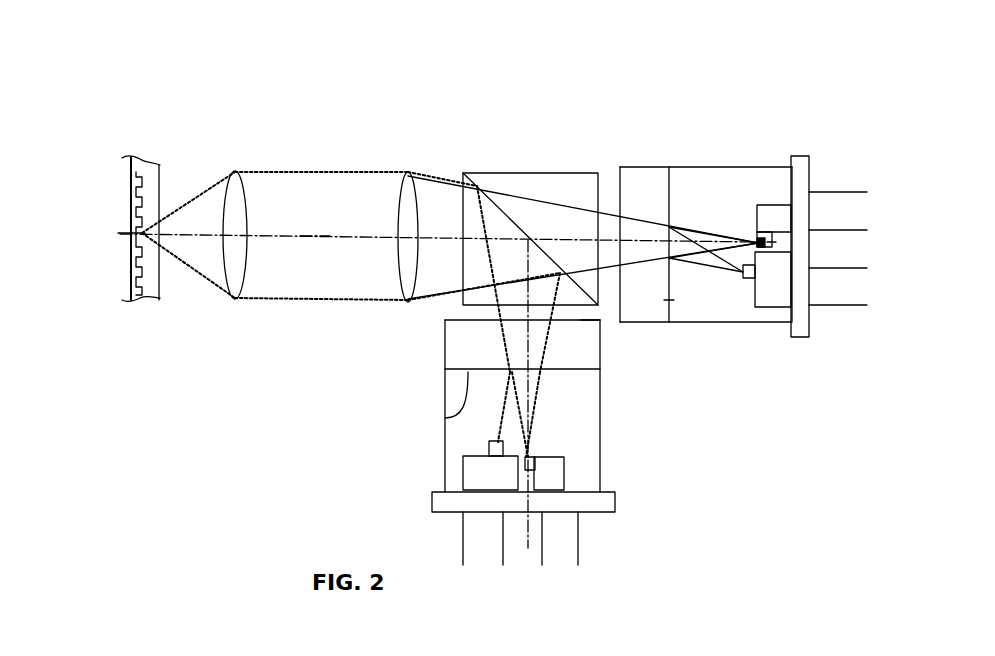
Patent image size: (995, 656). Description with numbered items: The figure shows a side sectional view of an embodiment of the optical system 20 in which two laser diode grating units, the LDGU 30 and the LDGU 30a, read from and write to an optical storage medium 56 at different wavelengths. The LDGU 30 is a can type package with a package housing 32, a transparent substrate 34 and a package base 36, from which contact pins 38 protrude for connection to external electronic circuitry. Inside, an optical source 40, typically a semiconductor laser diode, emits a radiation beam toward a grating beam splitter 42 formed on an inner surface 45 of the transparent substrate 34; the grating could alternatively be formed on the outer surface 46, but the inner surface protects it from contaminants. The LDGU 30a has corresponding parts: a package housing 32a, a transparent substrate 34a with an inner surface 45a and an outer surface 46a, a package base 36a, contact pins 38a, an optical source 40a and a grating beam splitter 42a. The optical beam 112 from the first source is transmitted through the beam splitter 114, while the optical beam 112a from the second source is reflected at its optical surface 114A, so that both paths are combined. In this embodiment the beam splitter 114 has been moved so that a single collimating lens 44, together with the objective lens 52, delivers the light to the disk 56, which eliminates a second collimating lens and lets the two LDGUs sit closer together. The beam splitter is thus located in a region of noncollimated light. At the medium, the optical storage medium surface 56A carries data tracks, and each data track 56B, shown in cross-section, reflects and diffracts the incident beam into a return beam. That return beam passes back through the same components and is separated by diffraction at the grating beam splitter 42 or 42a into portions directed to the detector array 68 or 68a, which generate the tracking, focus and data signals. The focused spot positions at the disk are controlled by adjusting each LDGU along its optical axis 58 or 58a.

The optical system 20 is at (487, 90).
The optical storage medium 56 is at (108, 153).
The optical storage medium surface 56A is at (125, 298).
The data track 56B is at (124, 234).
The objective lens 52 is at (232, 171).
The collimating lens 44 is at (407, 301).
The optical axis 58 is at (325, 236).
The beam splitter 114 is at (442, 174).
The optical surface 114A is at (510, 215).
The optical beam 112 is at (584, 177).
The optical beam 112a is at (497, 300).
The LDGU 30 is at (705, 145).
The outer surface 46 is at (620, 187).
The package housing 32 is at (733, 167).
The transparent substrate 34 is at (669, 167).
The package base 36 is at (800, 156).
The contact pins 38 is at (838, 305).
The optical source 40 is at (757, 241).
The grating beam splitter 42 is at (661, 250).
The detector array 68 is at (755, 272).
The inner surface 45 is at (668, 300).
The LDGU 30a is at (690, 456).
The package housing 32a is at (445, 454).
The outer surface 46a is at (580, 325).
The transparent substrate 34a is at (602, 361).
The package base 36a is at (616, 500).
The contact pins 38a is at (505, 550).
The optical axis 58a is at (528, 422).
The grating beam splitter 42a is at (508, 370).
The inner surface 45a is at (445, 420).
The detector array 68a is at (489, 452).
The optical source 40a is at (536, 457).